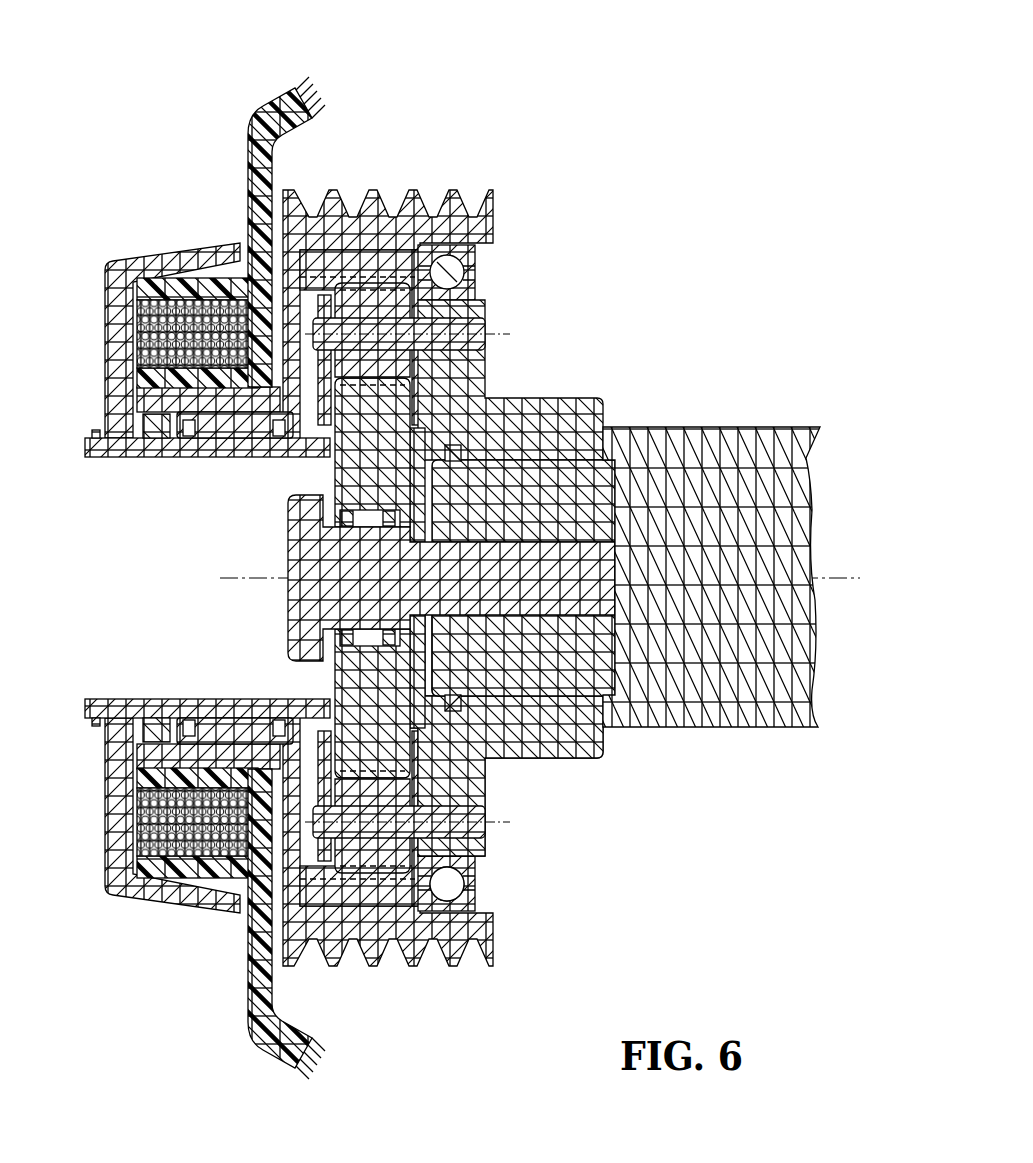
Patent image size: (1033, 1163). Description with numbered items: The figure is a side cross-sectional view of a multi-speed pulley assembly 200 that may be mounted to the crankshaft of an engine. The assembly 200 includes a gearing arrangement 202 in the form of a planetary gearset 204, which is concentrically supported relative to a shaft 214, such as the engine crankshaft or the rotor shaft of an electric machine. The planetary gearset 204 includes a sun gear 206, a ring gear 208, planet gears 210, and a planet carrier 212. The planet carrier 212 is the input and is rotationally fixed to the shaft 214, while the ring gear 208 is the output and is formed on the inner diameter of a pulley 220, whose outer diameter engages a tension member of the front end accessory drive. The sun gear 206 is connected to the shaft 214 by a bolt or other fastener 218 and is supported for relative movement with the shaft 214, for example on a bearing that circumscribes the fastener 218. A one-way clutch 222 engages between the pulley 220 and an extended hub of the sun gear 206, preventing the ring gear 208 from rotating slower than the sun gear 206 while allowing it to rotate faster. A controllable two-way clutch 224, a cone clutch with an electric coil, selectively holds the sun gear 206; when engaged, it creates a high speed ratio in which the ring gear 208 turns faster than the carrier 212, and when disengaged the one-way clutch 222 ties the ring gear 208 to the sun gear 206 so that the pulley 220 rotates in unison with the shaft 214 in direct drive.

The multi-speed pulley assembly 200 is at (592, 78).
The gearing arrangement 202 is at (522, 298).
The planetary gearset 204 is at (523, 854).
The sun gear 206 is at (372, 740).
The ring gear 208 is at (358, 900).
The planet gears 210 is at (462, 884).
The planet carrier 212 is at (592, 743).
The shaft 214 is at (682, 427).
The fastener 218 is at (527, 602).
The pulley 220 is at (421, 188).
The one-way clutch 222 is at (235, 435).
The two-way clutch 224 is at (166, 213).